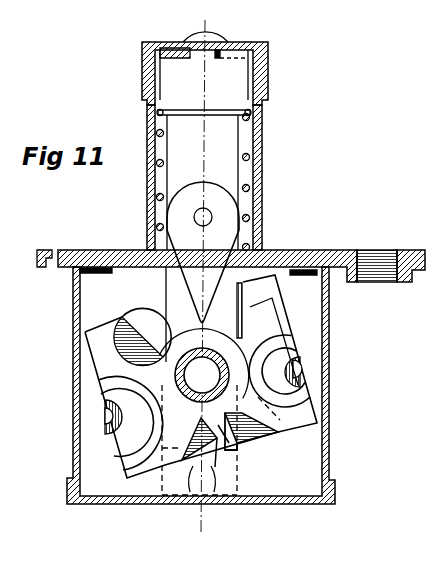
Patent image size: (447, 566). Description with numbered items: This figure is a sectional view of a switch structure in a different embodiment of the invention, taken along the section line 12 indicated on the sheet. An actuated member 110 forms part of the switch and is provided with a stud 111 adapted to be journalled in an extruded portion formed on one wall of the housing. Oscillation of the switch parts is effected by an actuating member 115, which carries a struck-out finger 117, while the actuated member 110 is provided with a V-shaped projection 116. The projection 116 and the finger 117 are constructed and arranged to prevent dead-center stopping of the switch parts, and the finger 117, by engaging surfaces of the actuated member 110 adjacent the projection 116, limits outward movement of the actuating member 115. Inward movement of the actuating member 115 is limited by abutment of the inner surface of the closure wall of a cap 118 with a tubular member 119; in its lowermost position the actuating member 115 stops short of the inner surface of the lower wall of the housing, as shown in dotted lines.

The section line 12- 12 is at (204, 20).
The actuated member 110 is at (293, 420).
The stud 111 is at (276, 316).
The actuating member 115 is at (222, 154).
The V-shaped projection 116 is at (243, 442).
The struck-out finger 117 is at (204, 428).
The cap 118 is at (268, 72).
The tubular member 119 is at (260, 197).